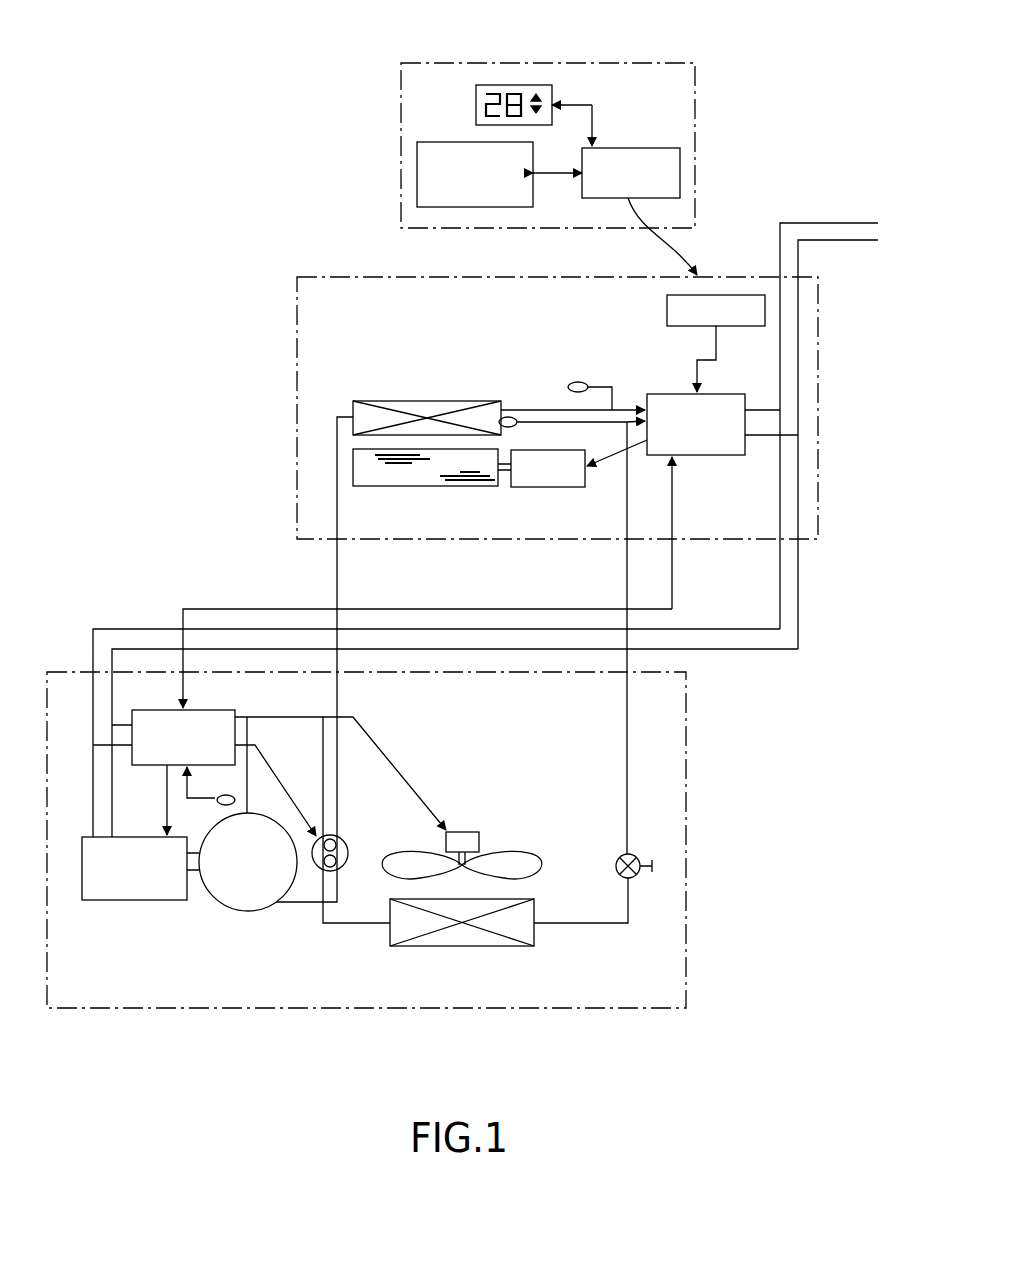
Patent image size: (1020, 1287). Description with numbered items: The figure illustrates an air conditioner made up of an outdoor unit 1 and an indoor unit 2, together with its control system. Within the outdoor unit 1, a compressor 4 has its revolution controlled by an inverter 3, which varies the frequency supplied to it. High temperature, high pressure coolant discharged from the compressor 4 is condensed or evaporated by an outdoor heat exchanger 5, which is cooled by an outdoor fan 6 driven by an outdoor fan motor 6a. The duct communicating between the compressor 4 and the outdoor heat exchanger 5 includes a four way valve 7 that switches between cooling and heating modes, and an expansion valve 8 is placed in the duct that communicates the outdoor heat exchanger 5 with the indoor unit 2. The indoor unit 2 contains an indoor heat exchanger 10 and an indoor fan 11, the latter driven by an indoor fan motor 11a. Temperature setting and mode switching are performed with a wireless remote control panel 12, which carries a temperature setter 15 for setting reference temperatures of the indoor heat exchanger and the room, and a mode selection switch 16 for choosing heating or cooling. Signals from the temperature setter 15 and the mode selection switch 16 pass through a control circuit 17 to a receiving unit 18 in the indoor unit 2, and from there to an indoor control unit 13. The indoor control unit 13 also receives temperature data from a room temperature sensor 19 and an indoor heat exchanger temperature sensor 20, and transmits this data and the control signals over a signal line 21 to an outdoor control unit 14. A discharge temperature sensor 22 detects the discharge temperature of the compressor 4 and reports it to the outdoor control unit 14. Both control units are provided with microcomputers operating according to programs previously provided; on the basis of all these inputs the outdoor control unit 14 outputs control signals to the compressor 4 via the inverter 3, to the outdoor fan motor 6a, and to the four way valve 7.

The outdoor unit 1 is at (686, 860).
The indoor unit 2 is at (707, 277).
The inverter 3 is at (128, 900).
The compressor 4 is at (263, 908).
The outdoor heat exchanger 5 is at (432, 946).
The outdoor fan 6 is at (540, 856).
The outdoor fan motor 6a is at (476, 832).
The four way valve 7 is at (348, 850).
The expansion valve 8 is at (636, 855).
The indoor heat exchanger 10 is at (353, 403).
The indoor fan 11 is at (355, 487).
The indoor fan motor 11a is at (556, 488).
The control panel 12 is at (565, 64).
The indoor control unit 13 is at (730, 394).
The outdoor control unit 14 is at (226, 702).
The temperature setter 15 is at (552, 92).
The mode selection switch 16 is at (470, 142).
The control circuit 17 is at (632, 148).
The receiving unit 18 is at (667, 312).
The room temperature sensor 19 is at (570, 386).
The indoor heat exchanger temperature sensor 20 is at (516, 426).
The signal line 21 is at (493, 609).
The discharge temperature sensor 22 is at (218, 800).